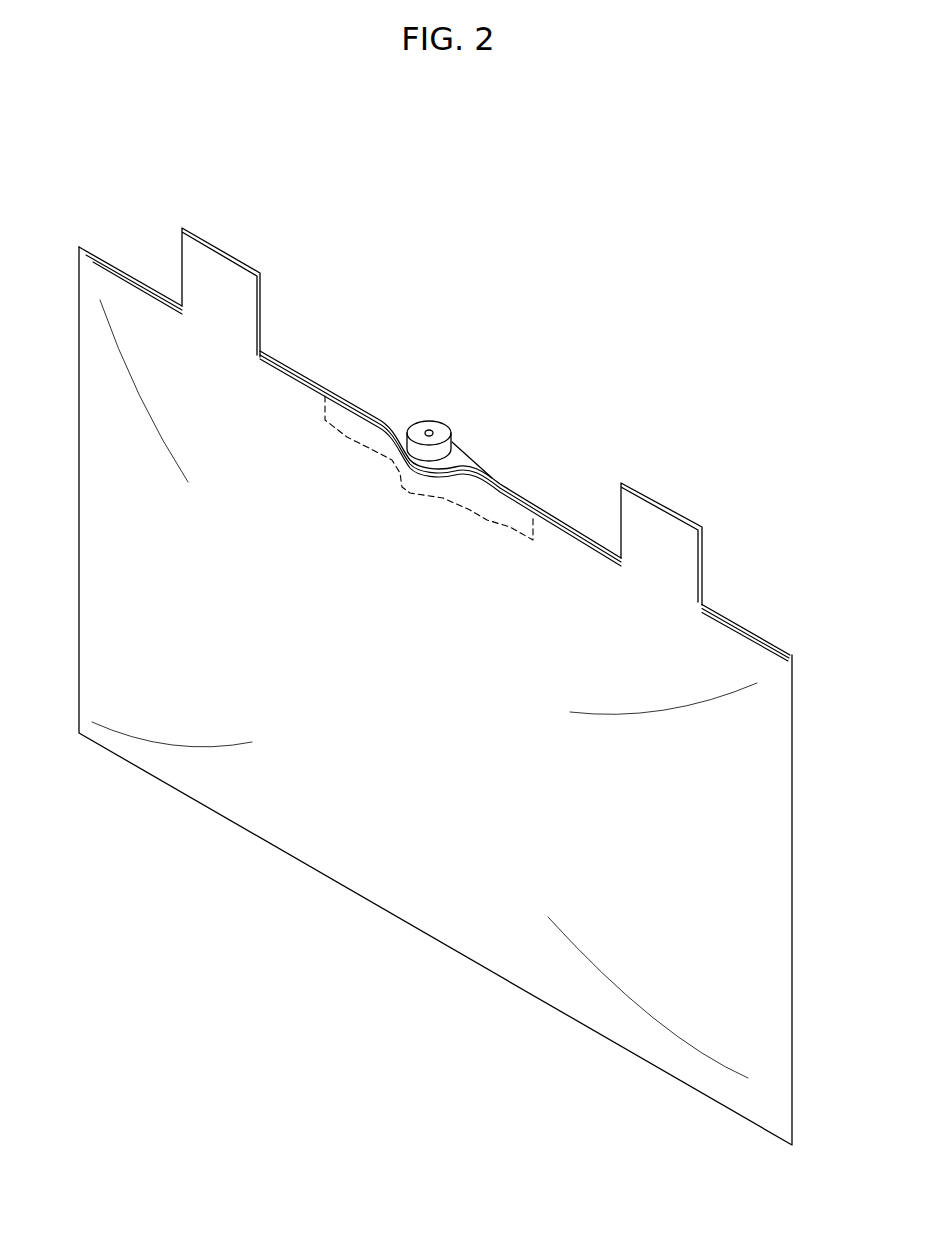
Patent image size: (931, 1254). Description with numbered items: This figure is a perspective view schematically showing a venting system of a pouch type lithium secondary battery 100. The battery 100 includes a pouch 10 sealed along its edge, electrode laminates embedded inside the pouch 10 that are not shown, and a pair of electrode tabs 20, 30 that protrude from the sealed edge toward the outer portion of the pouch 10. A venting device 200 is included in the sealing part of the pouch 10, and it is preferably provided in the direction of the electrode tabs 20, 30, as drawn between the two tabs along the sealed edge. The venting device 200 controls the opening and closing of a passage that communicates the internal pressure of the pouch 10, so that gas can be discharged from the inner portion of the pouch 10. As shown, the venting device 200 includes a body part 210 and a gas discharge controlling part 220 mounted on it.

The pouch type lithium secondary battery 100 is at (391, 188).
The pouch 10 is at (95, 280).
The electrode tab 20 is at (653, 525).
The electrode tab 30 is at (226, 272).
The venting device 200 is at (477, 316).
The body part 210 is at (492, 510).
The gas discharge controlling part 220 is at (437, 424).